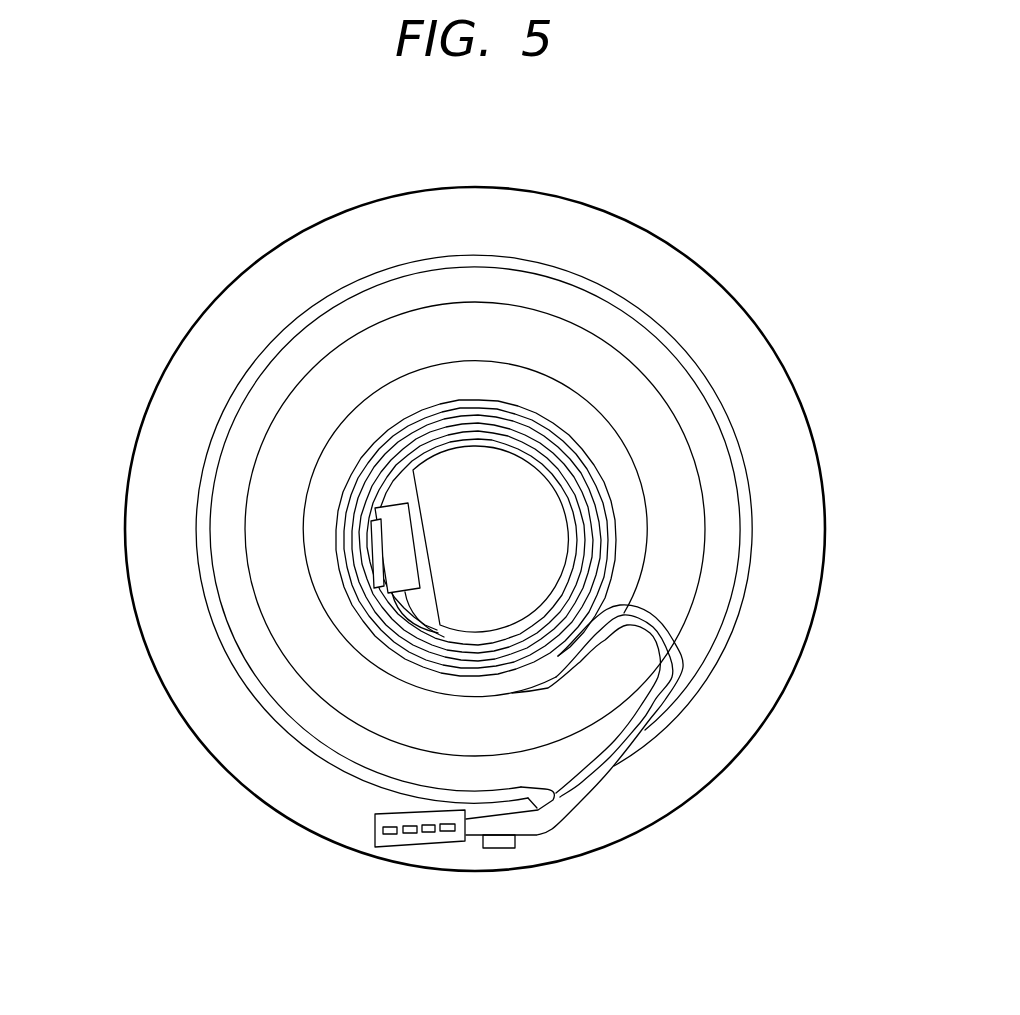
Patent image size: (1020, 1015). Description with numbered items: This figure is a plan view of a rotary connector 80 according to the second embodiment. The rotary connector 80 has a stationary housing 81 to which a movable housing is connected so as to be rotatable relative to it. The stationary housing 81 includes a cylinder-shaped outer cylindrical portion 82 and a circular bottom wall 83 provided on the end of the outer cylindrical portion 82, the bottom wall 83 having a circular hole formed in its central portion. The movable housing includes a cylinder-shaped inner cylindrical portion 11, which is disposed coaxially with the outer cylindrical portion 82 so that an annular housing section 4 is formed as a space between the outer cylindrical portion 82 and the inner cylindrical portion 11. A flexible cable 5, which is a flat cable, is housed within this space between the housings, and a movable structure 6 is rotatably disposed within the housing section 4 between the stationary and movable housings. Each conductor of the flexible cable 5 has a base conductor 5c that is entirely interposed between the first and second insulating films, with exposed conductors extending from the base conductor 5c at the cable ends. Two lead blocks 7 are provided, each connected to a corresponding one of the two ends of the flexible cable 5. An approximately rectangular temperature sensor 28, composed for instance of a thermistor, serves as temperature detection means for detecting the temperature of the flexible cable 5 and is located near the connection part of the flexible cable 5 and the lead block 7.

The rotary connector 80 is at (689, 222).
The stationary housing 81 is at (815, 420).
The outer cylindrical portion 82 is at (757, 482).
The bottom wall 83 is at (723, 520).
The housing section 4 is at (250, 425).
The flexible cable 5 is at (463, 532).
The base conductor 5c is at (662, 628).
The movable structure 6 is at (650, 425).
The lead block 7 is at (397, 558).
The inner cylindrical portion 11 is at (527, 453).
The temperature sensor 28 is at (497, 849).